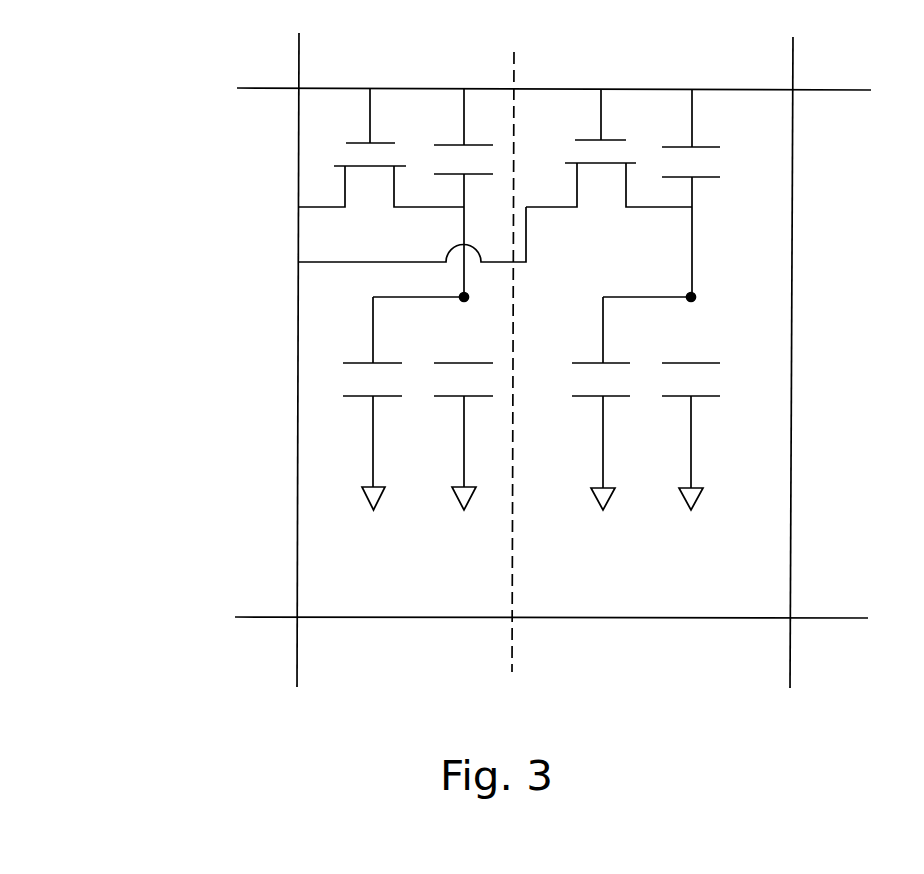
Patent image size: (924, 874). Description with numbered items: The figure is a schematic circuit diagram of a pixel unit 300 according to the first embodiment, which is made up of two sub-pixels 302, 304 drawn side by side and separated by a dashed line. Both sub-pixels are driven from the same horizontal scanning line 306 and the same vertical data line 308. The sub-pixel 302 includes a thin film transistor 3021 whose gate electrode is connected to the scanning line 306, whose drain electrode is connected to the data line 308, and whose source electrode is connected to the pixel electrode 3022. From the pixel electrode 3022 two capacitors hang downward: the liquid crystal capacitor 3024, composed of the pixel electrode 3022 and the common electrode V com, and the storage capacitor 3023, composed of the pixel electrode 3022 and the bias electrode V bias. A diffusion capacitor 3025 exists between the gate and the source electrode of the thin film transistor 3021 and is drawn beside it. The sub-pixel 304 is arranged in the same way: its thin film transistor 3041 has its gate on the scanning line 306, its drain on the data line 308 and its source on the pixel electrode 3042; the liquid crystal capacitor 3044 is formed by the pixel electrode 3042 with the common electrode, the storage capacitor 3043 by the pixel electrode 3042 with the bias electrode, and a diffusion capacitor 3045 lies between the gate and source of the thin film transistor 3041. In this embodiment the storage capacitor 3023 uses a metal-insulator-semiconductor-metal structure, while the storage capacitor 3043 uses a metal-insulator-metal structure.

The pixel unit 300 is at (70, 53).
The sub-pixel 302 is at (414, 103).
The sub-pixel 304 is at (645, 102).
The scanning line 306 is at (828, 90).
The data line 308 is at (298, 422).
The thin film transistor 3021 is at (360, 185).
The pixel electrode 3022 is at (464, 297).
The storage capacitor 3023 is at (433, 380).
The liquid crystal capacitor 3024 is at (345, 380).
The diffusion capacitor 3025 is at (438, 162).
The thin film transistor 3041 is at (578, 153).
The pixel electrode 3042 is at (691, 297).
The storage capacitor 3043 is at (660, 380).
The liquid crystal capacitor 3044 is at (572, 380).
The diffusion capacitor 3045 is at (667, 163).